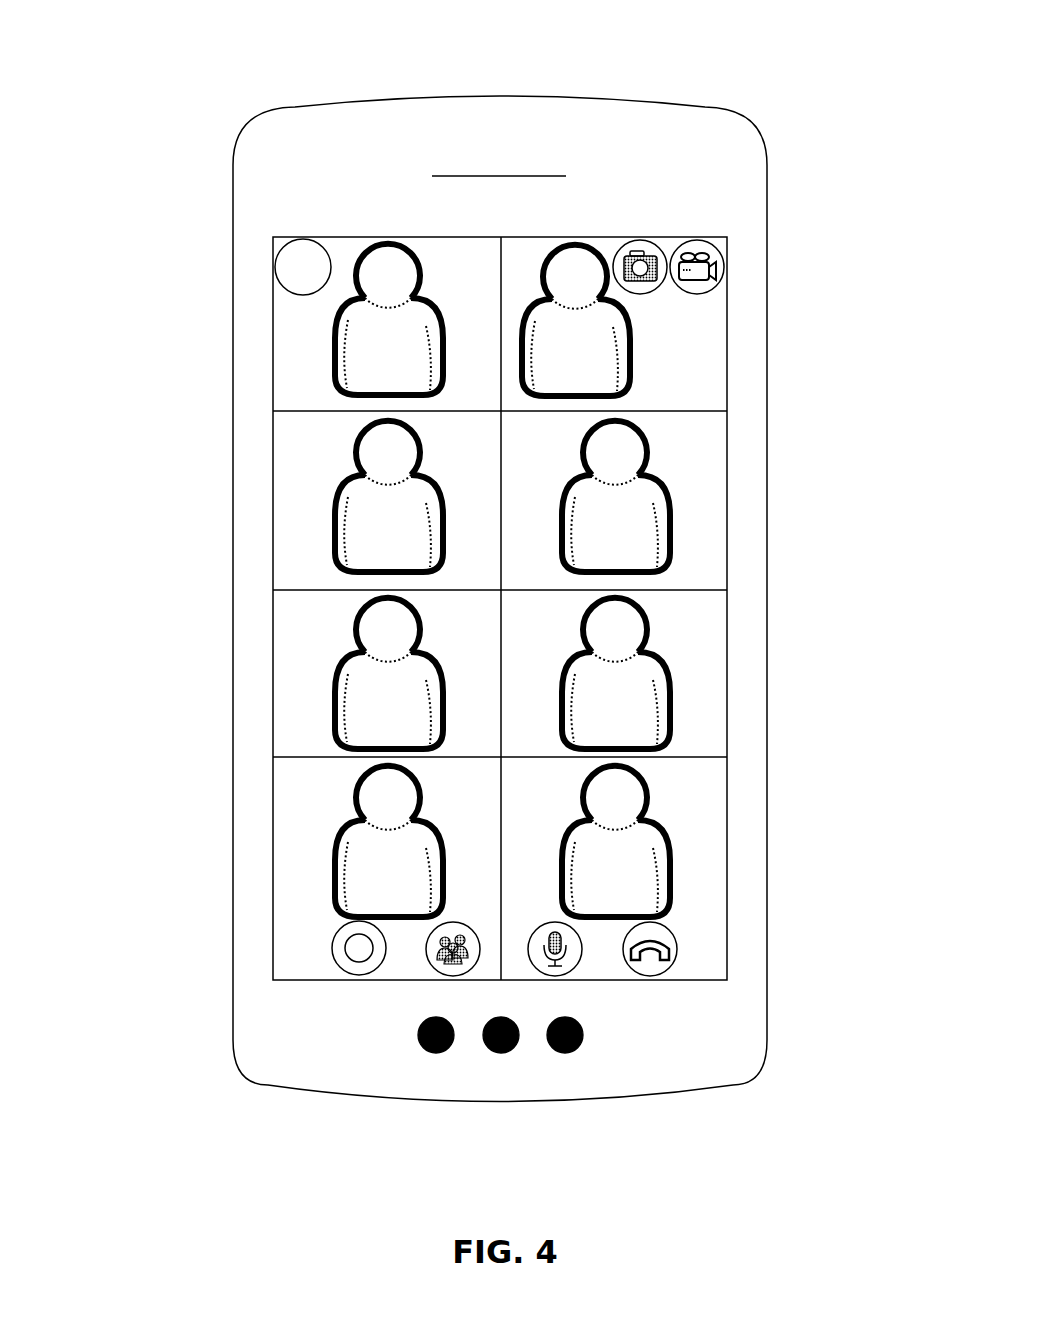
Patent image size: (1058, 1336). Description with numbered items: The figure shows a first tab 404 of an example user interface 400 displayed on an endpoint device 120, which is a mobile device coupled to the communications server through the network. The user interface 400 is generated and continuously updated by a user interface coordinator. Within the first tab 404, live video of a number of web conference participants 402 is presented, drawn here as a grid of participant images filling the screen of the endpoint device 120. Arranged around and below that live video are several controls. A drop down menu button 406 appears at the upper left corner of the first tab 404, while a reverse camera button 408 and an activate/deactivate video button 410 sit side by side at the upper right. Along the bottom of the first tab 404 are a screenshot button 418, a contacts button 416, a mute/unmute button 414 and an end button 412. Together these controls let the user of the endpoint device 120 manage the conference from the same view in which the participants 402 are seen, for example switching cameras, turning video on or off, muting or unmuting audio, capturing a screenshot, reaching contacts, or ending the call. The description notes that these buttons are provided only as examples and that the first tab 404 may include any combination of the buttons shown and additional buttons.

The third endpoint device 120 is at (471, 141).
The user interface 400 is at (117, 75).
The web conference participants 402 is at (368, 347).
The first tab 404 is at (256, 461).
The drop down menu button 406 is at (290, 279).
The reverse camera button 408 is at (638, 247).
The activate/deactivate video button 410 is at (703, 280).
The end button 412 is at (663, 937).
The mute/unmute button 414 is at (578, 949).
The contacts button 416 is at (452, 963).
The screenshot button 418 is at (358, 952).